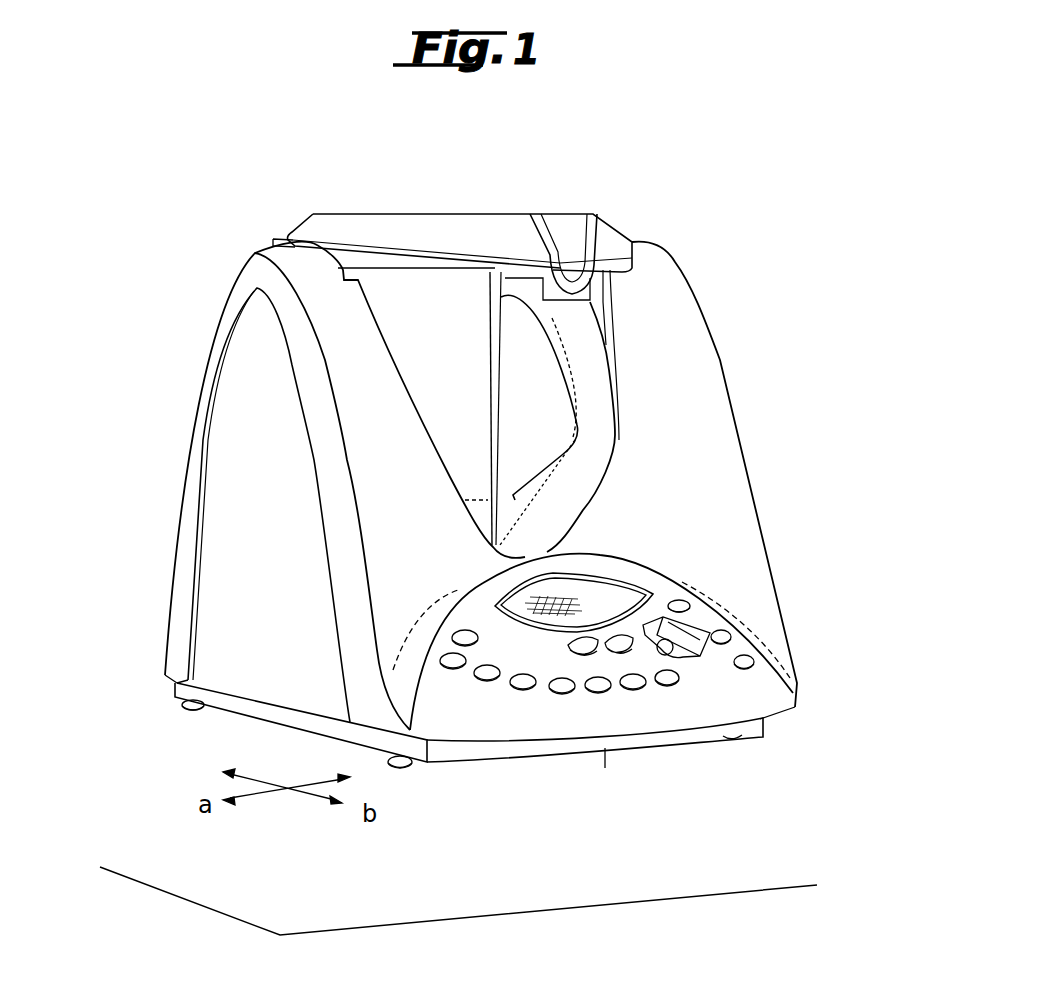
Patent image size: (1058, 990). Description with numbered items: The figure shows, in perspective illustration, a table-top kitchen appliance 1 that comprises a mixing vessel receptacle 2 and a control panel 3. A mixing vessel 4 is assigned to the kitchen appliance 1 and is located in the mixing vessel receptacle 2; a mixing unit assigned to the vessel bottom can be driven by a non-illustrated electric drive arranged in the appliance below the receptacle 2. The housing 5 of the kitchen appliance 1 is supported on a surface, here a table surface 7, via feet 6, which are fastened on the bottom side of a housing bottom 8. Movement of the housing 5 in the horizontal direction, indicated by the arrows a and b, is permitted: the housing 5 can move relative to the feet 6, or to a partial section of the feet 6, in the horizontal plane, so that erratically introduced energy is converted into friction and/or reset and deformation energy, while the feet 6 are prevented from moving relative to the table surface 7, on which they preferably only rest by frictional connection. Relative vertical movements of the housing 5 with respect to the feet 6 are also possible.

The kitchen appliance 1 is at (640, 184).
The mixing vessel receptacle 2 is at (612, 343).
The control panel 3 is at (707, 690).
The mixing vessel 4 is at (437, 315).
The housing 5 is at (243, 512).
The feet 6 is at (192, 713).
The table surface 7 is at (462, 883).
The housing bottom 8 is at (607, 747).